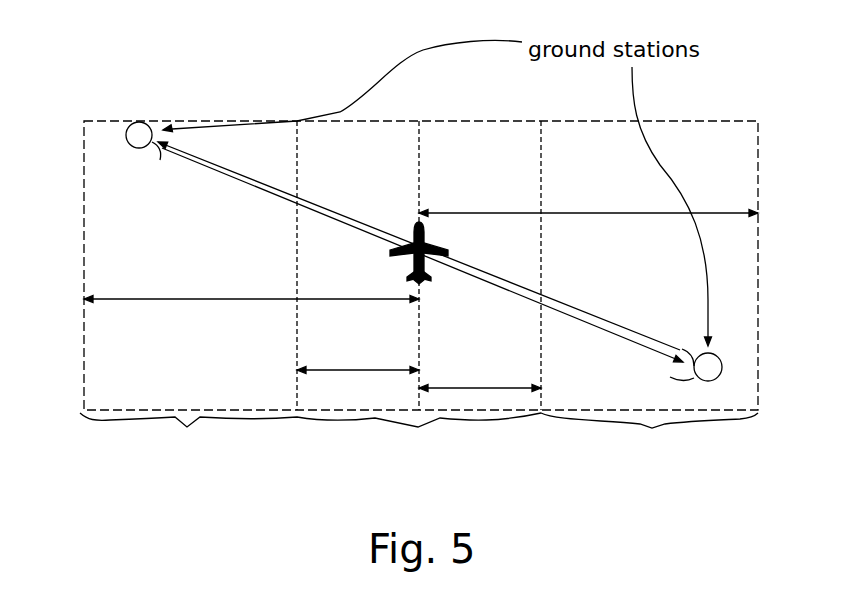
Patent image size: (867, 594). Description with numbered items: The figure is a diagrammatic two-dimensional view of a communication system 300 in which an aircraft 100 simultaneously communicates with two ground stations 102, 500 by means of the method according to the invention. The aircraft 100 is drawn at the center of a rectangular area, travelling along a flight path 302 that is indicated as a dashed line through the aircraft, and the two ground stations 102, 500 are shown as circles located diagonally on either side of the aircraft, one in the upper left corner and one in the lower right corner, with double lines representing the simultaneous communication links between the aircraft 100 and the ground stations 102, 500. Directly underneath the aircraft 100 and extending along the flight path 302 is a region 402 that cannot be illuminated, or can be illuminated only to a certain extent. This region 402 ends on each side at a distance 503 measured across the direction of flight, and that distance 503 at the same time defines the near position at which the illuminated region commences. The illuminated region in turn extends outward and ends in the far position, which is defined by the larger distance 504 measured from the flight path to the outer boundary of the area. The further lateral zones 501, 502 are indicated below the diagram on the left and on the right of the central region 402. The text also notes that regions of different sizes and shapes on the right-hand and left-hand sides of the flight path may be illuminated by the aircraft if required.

The aircraft 100 is at (424, 267).
The ground station 102 is at (722, 366).
The communication system 300 is at (777, 110).
The flight path 302 is at (419, 162).
The region 402 is at (387, 418).
The ground station 500 is at (140, 121).
The zone 501 is at (170, 417).
The zone 502 is at (677, 427).
The distance 503 is at (307, 366).
The distance 504 is at (115, 297).